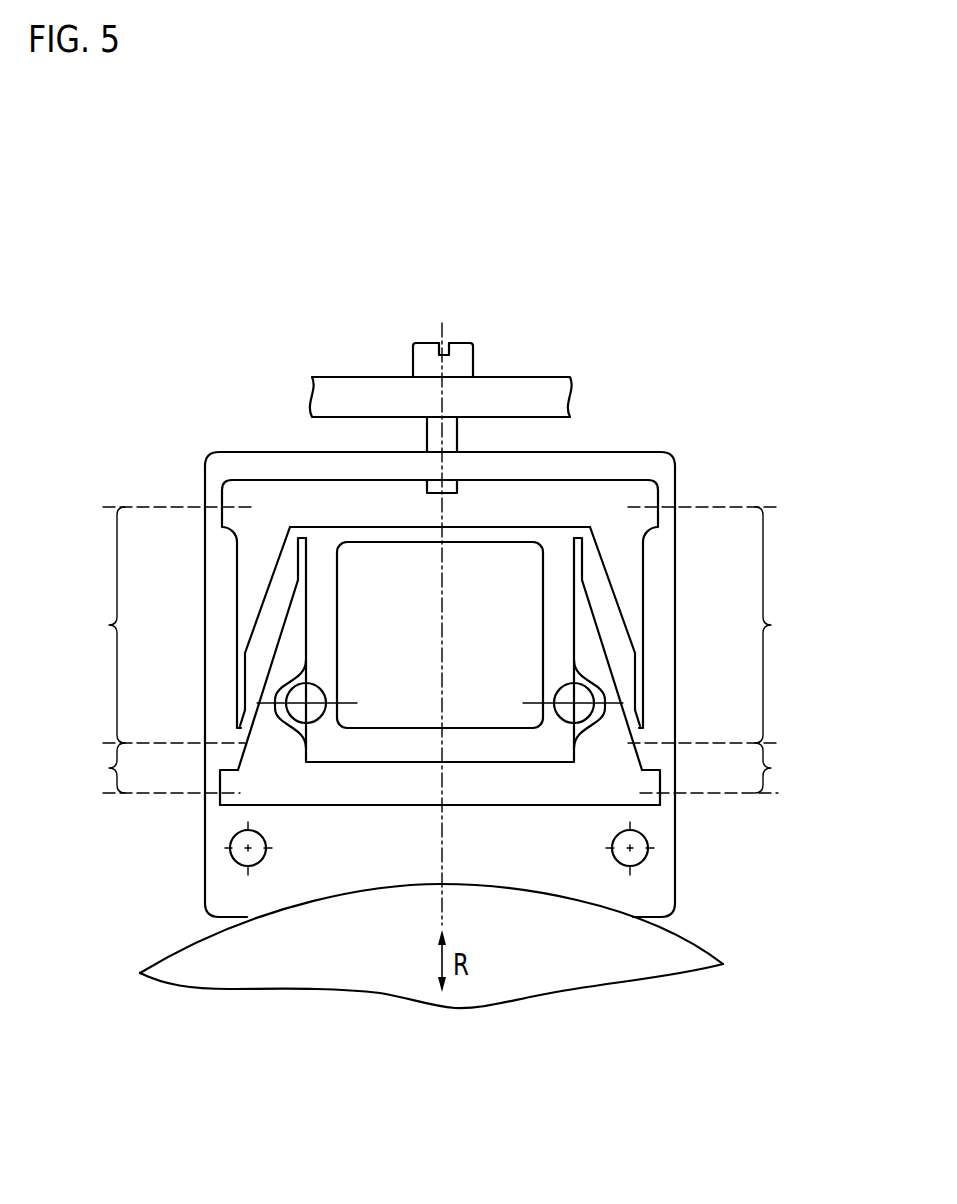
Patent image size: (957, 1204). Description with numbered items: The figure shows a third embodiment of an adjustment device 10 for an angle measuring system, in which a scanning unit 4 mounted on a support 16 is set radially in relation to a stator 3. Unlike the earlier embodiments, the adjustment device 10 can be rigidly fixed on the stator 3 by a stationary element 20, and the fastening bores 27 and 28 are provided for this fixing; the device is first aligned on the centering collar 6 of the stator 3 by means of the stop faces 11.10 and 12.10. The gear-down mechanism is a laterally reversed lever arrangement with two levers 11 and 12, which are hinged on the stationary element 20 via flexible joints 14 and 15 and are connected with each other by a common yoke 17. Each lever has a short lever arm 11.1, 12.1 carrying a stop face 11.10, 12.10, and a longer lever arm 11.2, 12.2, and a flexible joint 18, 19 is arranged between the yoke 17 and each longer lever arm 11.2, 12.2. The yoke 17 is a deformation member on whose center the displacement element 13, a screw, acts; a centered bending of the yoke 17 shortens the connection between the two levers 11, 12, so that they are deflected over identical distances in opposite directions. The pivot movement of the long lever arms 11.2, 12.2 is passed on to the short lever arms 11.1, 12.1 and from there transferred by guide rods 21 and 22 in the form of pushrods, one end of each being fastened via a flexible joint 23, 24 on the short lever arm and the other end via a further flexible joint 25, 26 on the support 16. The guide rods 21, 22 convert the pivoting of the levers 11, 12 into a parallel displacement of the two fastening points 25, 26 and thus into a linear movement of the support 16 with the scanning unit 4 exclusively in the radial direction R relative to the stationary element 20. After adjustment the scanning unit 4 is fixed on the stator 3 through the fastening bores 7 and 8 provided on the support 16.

The stator 3 is at (515, 392).
The scanning unit 4 is at (475, 608).
The centering collar 6 is at (445, 946).
The fastening bore 7 is at (318, 689).
The fastening bore 8 is at (566, 691).
The adjustment device 10 is at (680, 428).
The lever 11 is at (213, 601).
The lever 12 is at (662, 588).
The short lever arm 11.1 is at (156, 768).
The longer lever arm 11.2 is at (158, 625).
The short lever arm 12.1 is at (730, 768).
The longer lever arm 12.2 is at (725, 625).
The stop face 11.10 is at (300, 905).
The stop face 12.10 is at (591, 905).
The displacement element 13 is at (460, 356).
The flexible joint 14 is at (212, 808).
The flexible joint 15 is at (668, 805).
The support 16 is at (478, 528).
The yoke 17 is at (617, 462).
The flexible joint 18 is at (215, 493).
The flexible joint 19 is at (670, 498).
The stationary element 20 is at (663, 877).
The guide rod 21 is at (269, 626).
The guide rod 22 is at (626, 621).
The flexible joint 23 is at (247, 729).
The flexible joint 24 is at (631, 717).
The flexible joint 25 is at (300, 528).
The flexible joint 26 is at (578, 528).
The fastening bore 27 is at (250, 848).
The fastening bore 28 is at (628, 848).